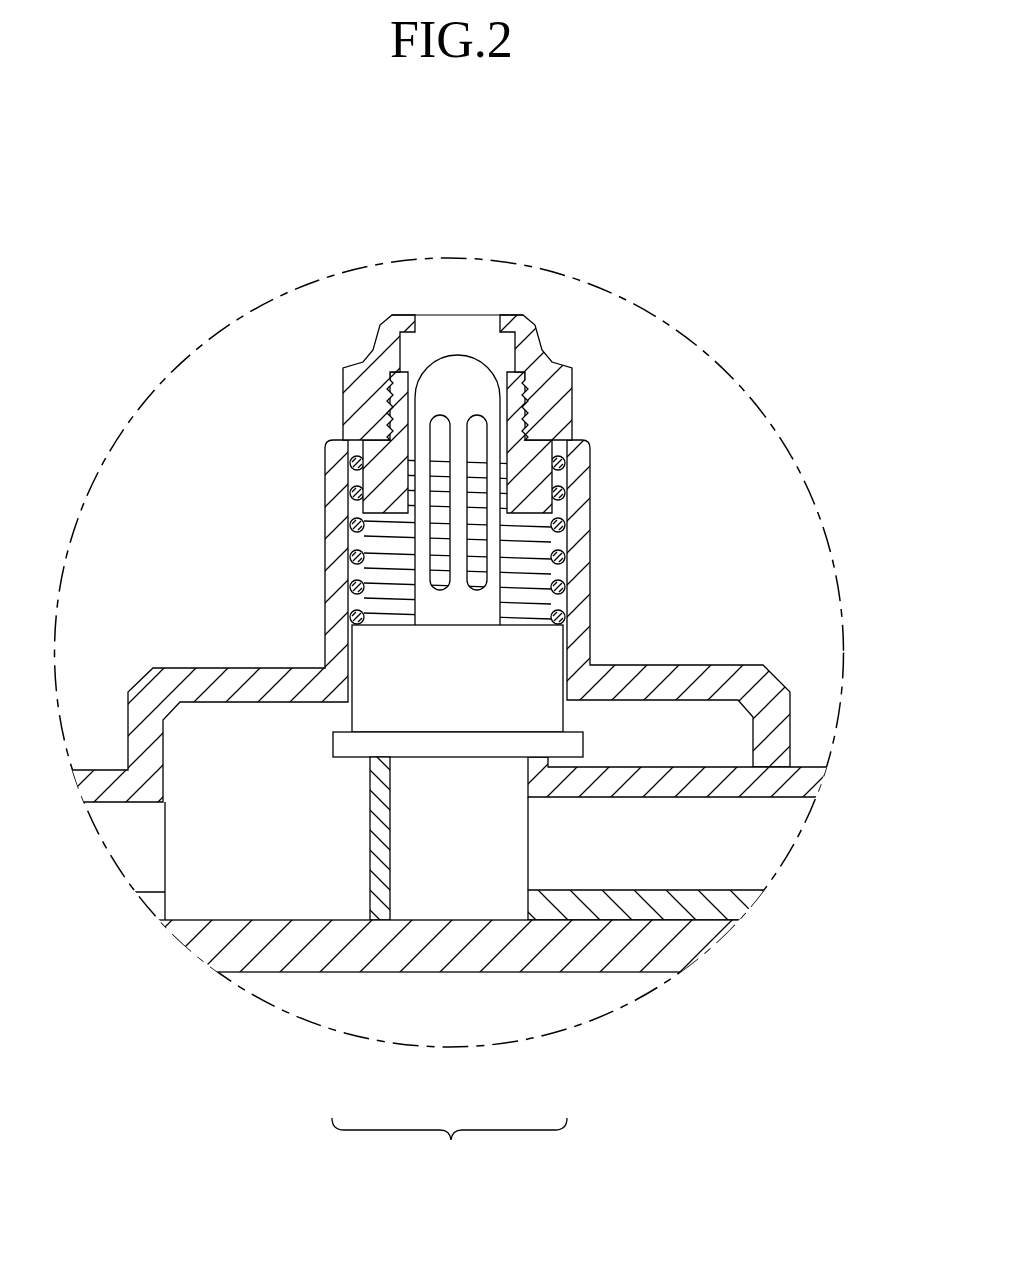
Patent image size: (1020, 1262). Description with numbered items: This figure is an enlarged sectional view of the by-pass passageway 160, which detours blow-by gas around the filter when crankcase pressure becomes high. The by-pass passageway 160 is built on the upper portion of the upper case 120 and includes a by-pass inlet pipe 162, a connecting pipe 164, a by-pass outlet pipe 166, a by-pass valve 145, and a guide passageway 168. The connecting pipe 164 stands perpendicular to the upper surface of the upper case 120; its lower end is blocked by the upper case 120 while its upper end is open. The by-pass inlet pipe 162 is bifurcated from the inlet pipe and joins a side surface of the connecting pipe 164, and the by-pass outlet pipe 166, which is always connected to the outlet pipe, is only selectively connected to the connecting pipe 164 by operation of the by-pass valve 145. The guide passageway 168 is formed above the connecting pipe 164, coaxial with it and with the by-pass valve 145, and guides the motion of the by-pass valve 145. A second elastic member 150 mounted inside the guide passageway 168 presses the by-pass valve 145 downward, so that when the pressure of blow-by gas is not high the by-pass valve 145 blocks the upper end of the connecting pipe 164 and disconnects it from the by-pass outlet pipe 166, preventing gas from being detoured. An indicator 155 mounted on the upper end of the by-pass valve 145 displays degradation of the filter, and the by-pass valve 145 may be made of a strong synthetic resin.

The upper case 120 is at (660, 940).
The by-pass valve 145 is at (535, 668).
The second elastic member 150 is at (570, 527).
The indicator 155 is at (483, 395).
The by-pass passageway 160 is at (449, 1145).
The by-pass inlet pipe 162 is at (585, 866).
The connecting pipe 164 is at (423, 875).
The by-pass outlet pipe 166 is at (297, 873).
The guide passageway 168 is at (565, 397).